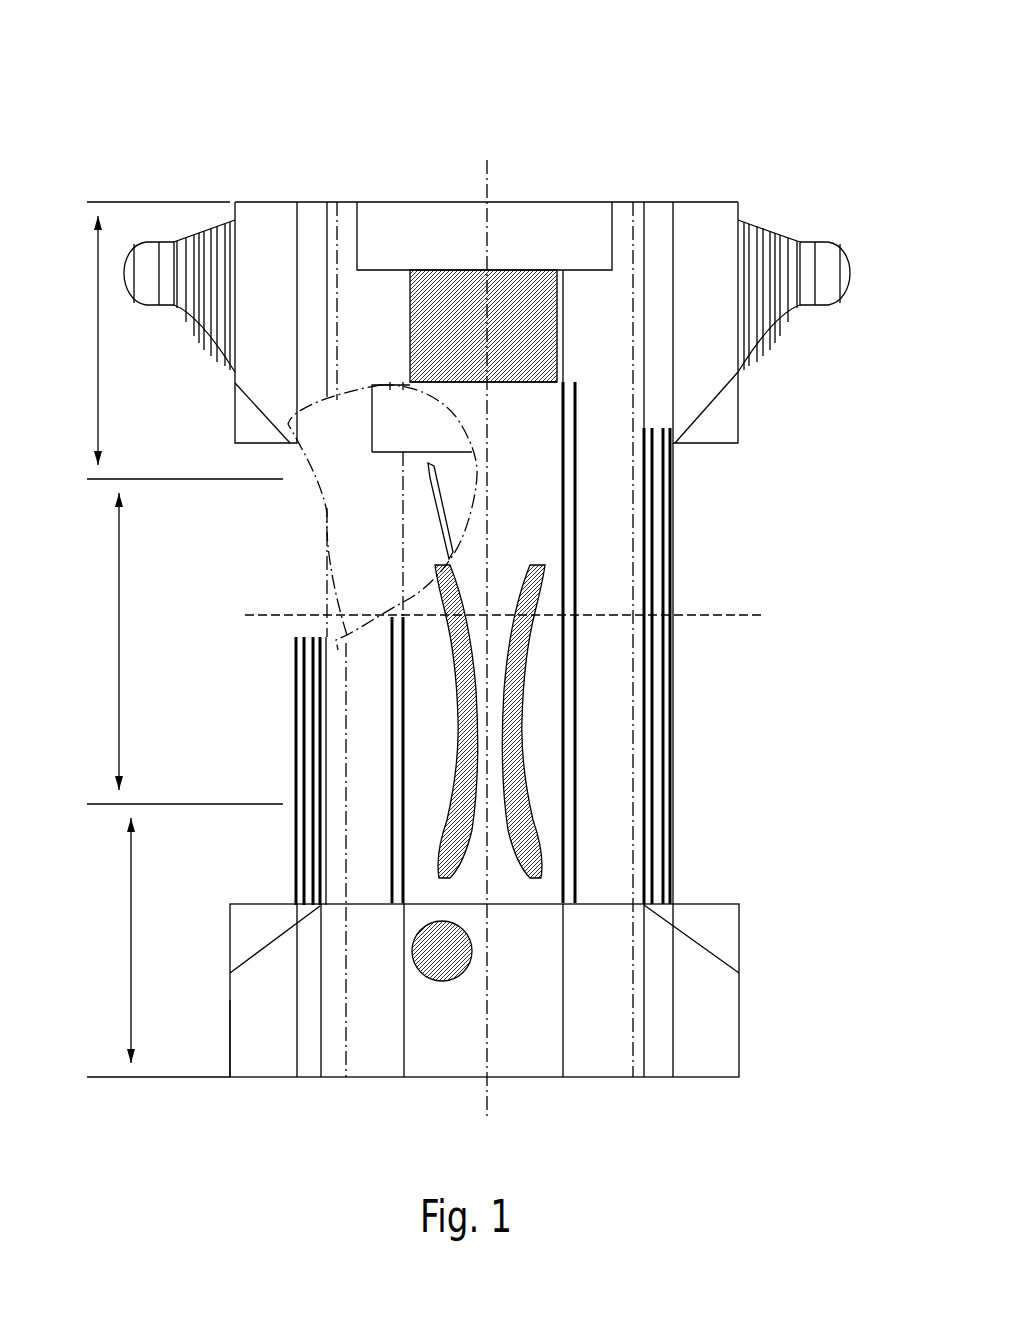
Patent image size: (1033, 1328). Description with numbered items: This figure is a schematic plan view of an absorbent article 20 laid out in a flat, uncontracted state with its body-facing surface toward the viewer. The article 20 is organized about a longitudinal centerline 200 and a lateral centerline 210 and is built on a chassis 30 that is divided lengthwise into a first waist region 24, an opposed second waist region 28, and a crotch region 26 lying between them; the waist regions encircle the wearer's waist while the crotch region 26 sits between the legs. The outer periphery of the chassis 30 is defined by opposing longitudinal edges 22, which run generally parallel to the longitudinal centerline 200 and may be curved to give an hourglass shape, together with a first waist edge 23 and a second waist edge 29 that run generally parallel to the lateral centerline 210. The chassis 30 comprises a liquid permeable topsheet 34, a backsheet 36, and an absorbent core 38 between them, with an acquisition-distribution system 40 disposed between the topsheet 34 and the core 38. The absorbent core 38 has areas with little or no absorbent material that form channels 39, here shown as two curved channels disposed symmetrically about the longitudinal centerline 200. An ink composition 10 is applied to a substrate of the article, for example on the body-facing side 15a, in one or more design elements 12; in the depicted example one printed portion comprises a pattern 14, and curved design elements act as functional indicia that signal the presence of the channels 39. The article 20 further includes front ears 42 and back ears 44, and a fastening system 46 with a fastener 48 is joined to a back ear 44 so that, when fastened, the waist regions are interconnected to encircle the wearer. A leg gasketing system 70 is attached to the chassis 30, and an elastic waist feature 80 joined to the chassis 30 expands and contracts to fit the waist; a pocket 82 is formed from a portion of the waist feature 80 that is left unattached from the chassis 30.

The absorbent article 20 is at (693, 100).
The second waist edge 29 is at (308, 202).
The chassis 30 is at (622, 202).
The elastic waist feature 80 is at (405, 224).
The longitudinal centerline 200 is at (497, 167).
The back ear 44 is at (770, 203).
The fastening system 46 is at (765, 240).
The fastener 48 is at (827, 253).
The pocket 82 is at (495, 270).
The pattern 14 is at (548, 358).
The ink composition 10 is at (535, 355).
The leg gasketing system 70 is at (598, 855).
The longitudinal edge 22 is at (672, 777).
The acquisition-distribution system 40 is at (415, 430).
The backsheet 36 is at (355, 510).
The absorbent core 38 is at (360, 470).
The channel 39 is at (430, 517).
The lateral centerline 210 is at (763, 615).
The topsheet 34 is at (448, 700).
The design element 12 is at (520, 723).
The front ear 42 is at (720, 1033).
The body-facing side 15a is at (285, 1068).
The first waist edge 23 is at (347, 1078).
The second waist region 28 is at (97, 334).
The crotch region 26 is at (118, 643).
The first waist region 24 is at (130, 934).